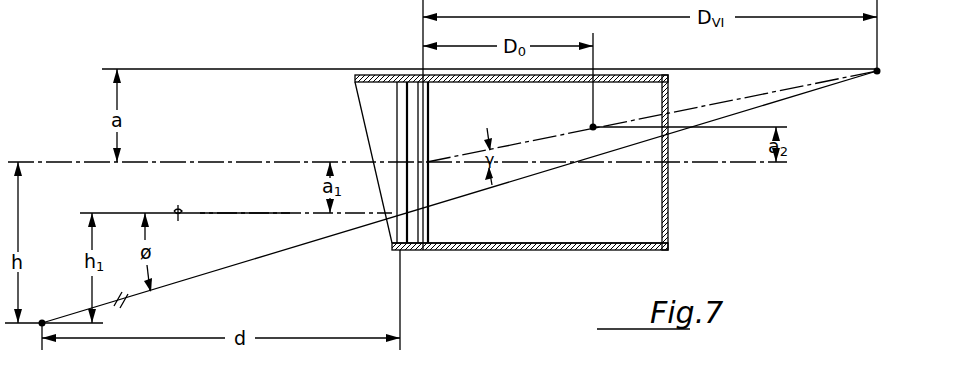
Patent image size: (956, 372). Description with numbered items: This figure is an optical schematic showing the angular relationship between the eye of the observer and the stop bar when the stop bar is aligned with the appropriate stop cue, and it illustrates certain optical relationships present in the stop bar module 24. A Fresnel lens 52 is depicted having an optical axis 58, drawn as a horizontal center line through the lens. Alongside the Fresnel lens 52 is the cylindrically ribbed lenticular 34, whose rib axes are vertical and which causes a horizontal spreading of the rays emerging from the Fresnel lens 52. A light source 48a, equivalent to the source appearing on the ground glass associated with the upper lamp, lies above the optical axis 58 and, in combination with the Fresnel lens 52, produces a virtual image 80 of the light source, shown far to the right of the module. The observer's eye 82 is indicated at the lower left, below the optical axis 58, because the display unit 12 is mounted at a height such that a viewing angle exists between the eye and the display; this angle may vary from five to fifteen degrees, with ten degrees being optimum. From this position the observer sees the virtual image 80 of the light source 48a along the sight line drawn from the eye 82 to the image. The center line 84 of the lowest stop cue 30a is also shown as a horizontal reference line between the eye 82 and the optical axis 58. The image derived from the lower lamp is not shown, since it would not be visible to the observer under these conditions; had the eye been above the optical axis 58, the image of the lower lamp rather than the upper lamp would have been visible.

The display unit 12 is at (670, 237).
The stop bar module 24 is at (553, 225).
The lenticular 34 is at (395, 232).
The Fresnel lens 52 is at (424, 240).
The optical axis 58 is at (268, 160).
The light source 48a is at (591, 125).
The virtual image 80 is at (876, 74).
The observer's eye 82 is at (42, 320).
The center line 84 is at (226, 215).
The lowest stop cue 30a is at (236, 205).